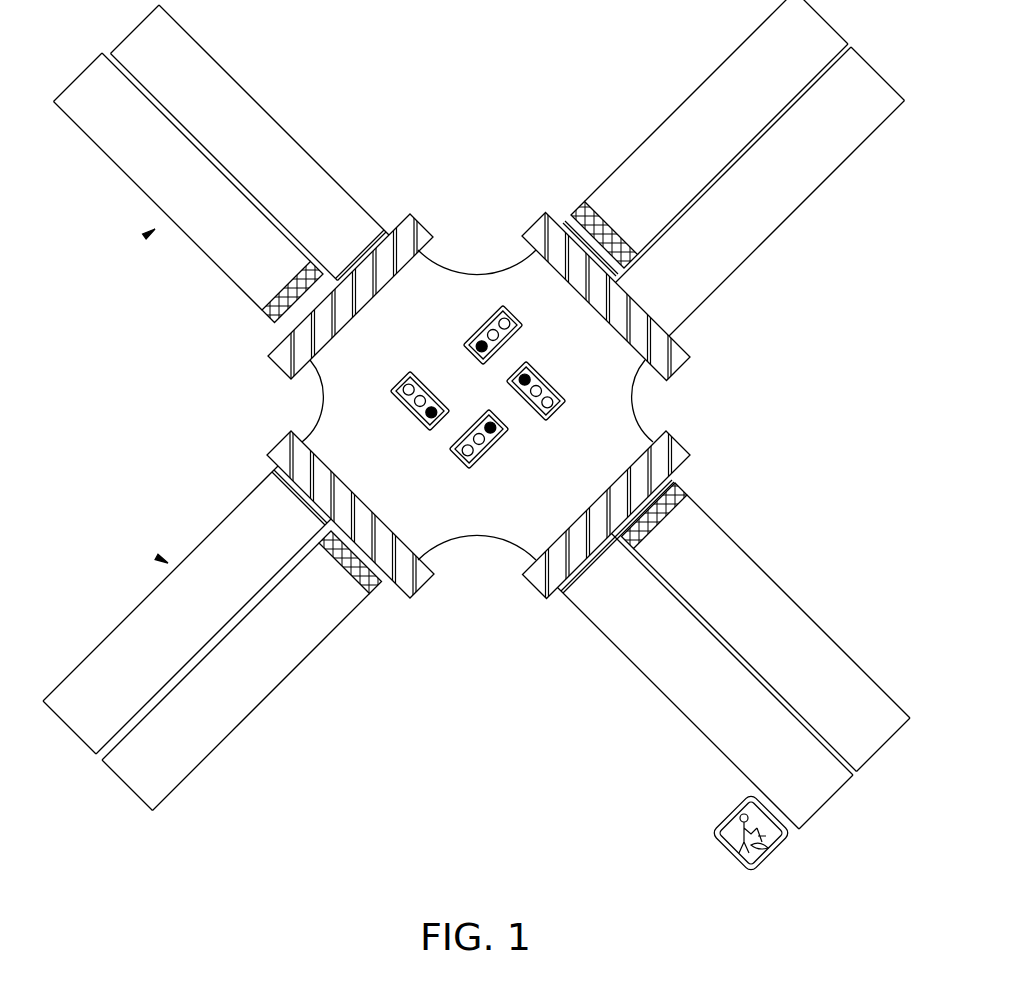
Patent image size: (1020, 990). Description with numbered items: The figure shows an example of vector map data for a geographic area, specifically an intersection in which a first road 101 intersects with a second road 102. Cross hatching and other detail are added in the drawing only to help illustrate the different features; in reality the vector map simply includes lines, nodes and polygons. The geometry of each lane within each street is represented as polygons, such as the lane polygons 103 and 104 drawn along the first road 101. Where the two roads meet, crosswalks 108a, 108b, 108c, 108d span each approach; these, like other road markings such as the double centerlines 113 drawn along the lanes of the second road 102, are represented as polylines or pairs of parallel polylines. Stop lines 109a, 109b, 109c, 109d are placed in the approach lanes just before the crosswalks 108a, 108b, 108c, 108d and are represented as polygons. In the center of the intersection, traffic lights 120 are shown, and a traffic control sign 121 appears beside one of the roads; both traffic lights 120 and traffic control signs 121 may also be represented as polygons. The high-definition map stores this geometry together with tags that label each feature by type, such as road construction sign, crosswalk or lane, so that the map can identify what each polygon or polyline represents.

The first road 101 is at (153, 230).
The second road 102 is at (167, 563).
The lane polygon 103 is at (93, 127).
The lane polygon 104 is at (217, 82).
The crosswalk 108a is at (409, 214).
The crosswalk 108b is at (532, 226).
The crosswalk 108c is at (533, 586).
The crosswalk 108d is at (428, 580).
The stop line 109a is at (260, 327).
The stop line 109b is at (578, 203).
The stop line 109c is at (688, 495).
The stop line 109d is at (373, 597).
The double centerline 113 is at (232, 623).
The traffic light 120 is at (415, 415).
The traffic control sign 121 is at (733, 822).